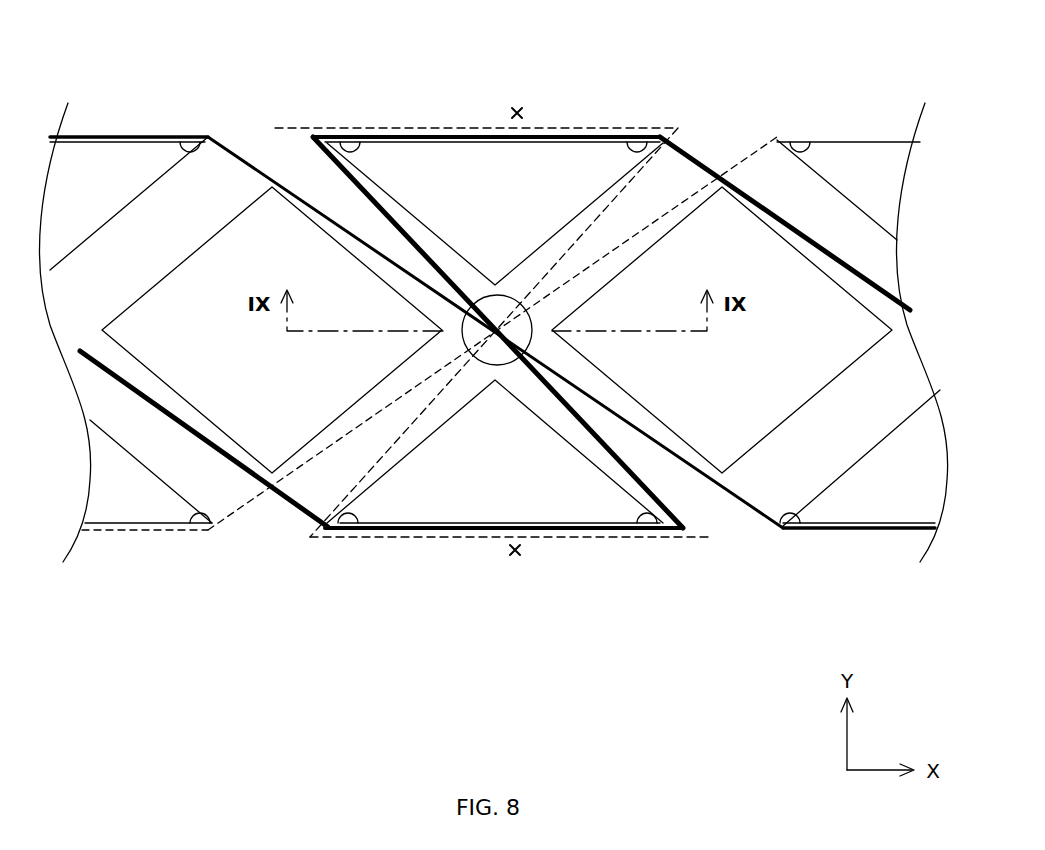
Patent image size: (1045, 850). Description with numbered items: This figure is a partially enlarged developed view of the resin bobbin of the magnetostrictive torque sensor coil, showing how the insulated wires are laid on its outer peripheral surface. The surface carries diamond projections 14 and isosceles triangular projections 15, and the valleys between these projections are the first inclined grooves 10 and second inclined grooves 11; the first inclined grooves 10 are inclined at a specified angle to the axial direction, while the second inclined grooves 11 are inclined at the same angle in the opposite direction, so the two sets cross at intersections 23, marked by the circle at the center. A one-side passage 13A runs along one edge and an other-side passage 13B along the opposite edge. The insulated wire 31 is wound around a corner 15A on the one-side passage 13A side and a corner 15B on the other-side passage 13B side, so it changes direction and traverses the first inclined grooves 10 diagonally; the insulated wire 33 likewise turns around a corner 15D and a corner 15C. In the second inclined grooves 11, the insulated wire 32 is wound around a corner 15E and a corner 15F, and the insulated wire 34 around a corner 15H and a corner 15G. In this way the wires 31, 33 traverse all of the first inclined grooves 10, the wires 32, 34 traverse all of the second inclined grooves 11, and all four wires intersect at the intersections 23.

The first inclined groove 10 is at (662, 188).
The second inclined groove 11 is at (325, 195).
The one-side passage 13A is at (517, 110).
The other-side passage 13B is at (515, 553).
The diamond projection 14 is at (272, 395).
The triangular projection 15 is at (122, 180).
The corner 15A is at (637, 142).
The corner 15B is at (350, 525).
The corner 15C is at (197, 525).
The corner 15D is at (800, 142).
The corner 15E is at (190, 142).
The corner 15F is at (790, 525).
The corner 15G is at (647, 525).
The corner 15H is at (350, 142).
The intersection 23 is at (510, 298).
The insulated wire 31 is at (415, 128).
The insulated wire 32 is at (100, 136).
The insulated wire 33 is at (113, 532).
The insulated wire 34 is at (423, 538).